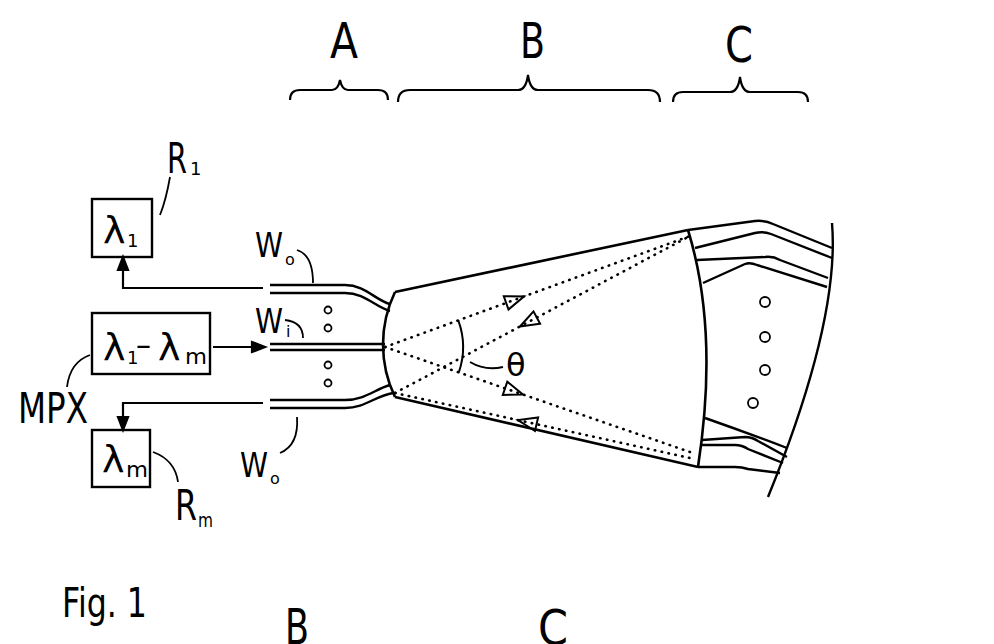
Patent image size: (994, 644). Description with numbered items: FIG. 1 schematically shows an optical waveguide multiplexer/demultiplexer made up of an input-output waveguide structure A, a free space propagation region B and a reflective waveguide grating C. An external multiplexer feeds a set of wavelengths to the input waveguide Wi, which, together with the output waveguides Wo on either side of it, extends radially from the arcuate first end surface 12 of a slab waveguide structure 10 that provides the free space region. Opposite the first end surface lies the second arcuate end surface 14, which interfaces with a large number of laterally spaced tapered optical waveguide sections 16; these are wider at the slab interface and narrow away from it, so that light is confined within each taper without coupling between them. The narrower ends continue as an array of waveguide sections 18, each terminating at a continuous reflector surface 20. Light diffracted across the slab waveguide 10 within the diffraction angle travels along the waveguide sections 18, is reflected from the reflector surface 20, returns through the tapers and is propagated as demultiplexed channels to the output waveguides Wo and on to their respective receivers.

The slab waveguide structure 10 is at (538, 264).
The first end surface 12 is at (381, 327).
The second arcuate end surface 14 is at (712, 375).
The tapered optical waveguide sections 16 is at (712, 223).
The waveguide sections 18 is at (793, 223).
The reflector surface 20 is at (812, 388).